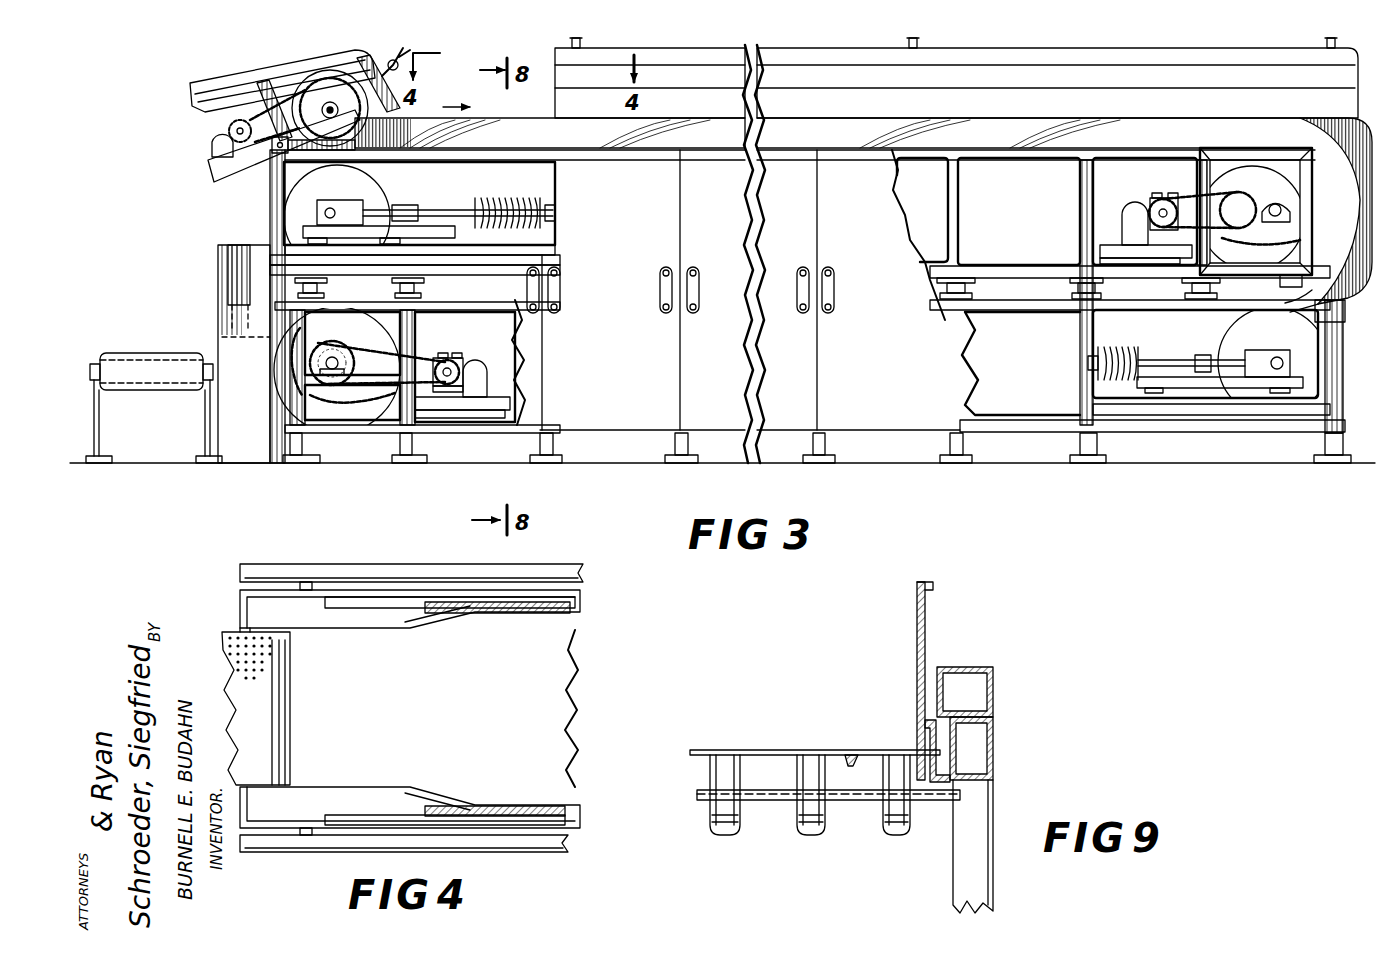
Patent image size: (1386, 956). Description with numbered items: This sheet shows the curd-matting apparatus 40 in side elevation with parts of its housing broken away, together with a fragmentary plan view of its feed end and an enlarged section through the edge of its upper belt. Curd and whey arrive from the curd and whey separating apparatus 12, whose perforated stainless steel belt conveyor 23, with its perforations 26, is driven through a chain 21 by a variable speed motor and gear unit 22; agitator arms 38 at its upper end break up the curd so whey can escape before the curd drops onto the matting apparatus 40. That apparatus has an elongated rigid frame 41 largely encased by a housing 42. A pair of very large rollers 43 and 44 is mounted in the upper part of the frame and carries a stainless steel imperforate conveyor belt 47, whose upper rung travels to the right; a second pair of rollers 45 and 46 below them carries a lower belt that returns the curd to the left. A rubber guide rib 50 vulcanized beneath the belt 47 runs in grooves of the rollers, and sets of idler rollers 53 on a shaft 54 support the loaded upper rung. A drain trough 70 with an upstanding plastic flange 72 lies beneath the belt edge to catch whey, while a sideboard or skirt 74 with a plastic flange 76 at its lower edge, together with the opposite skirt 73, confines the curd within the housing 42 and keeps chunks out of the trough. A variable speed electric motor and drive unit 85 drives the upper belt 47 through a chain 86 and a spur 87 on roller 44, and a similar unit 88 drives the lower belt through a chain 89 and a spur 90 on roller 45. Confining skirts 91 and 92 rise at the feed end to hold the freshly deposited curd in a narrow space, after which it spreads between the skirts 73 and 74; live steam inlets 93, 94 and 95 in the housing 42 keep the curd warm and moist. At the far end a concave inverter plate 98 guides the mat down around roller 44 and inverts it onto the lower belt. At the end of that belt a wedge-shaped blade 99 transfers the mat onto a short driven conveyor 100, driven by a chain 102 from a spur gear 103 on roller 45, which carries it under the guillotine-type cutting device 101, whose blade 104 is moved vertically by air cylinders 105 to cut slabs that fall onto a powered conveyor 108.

In FIG. 3, the curd and whey separating apparatus 12 is at (212, 70).
In FIG. 4, the curd and whey separating apparatus 12 is at (226, 614).
In FIG. 3, the chain 21 is at (229, 131).
In FIG. 3, the variable speed motor and gear unit 22 is at (212, 151).
In FIG. 4, the perforated stainless steel belt conveyor 23 is at (295, 717).
In FIG. 4, the perforations 26 is at (262, 663).
In FIG. 3, the agitator arms 38 is at (390, 60).
In FIG. 3, the curd-matting apparatus 40 is at (452, 78).
In FIG. 3, the elongated rigid frame 41 is at (470, 436).
In FIG. 4, the elongated rigid frame 41 is at (367, 574).
In FIG. 3, the housing 42 is at (798, 108).
In FIG. 4, the housing 42 is at (545, 612).
In FIG. 3, the roller 43 is at (380, 192).
In FIG. 3, the roller 44 is at (1239, 177).
In FIG. 3, the roller 45 is at (287, 394).
In FIG. 3, the roller 46 is at (1232, 337).
In FIG. 4, the stainless steel imperforate conveyor belt 47 is at (562, 698).
In FIG. 9, the stainless steel imperforate conveyor belt 47 is at (765, 750).
In FIG. 9, the rubber guide rib 50 is at (853, 767).
In FIG. 9, the idler rollers 53 is at (725, 838).
In FIG. 9, the shaft 54 is at (778, 802).
In FIG. 9, the drain trough 70 is at (946, 786).
In FIG. 9, the upstanding flange 72 is at (932, 768).
In FIG. 4, the sideboard or skirt 73 is at (398, 598).
In FIG. 3, the sideboard or skirt 74 is at (585, 135).
In FIG. 4, the sideboard or skirt 74 is at (385, 815).
In FIG. 9, the sideboard or skirt 74 is at (915, 618).
In FIG. 9, the plastic flange 76 is at (931, 724).
In FIG. 3, the variable speed electric motor and drive unit 85 is at (1122, 229).
In FIG. 3, the chain 86 is at (1178, 204).
In FIG. 3, the spur 87 is at (1255, 196).
In FIG. 3, the variable speed electric motor and drive unit 88 is at (486, 376).
In FIG. 3, the chain 89 is at (452, 360).
In FIG. 3, the spur 90 is at (380, 354).
In FIG. 4, the confining skirt 91 is at (404, 626).
In FIG. 4, the confining skirt 92 is at (465, 803).
In FIG. 3, the live steam inlet 93 is at (583, 42).
In FIG. 3, the live steam inlet 94 is at (920, 42).
In FIG. 3, the live steam inlet 95 is at (1338, 42).
In FIG. 3, the inverter plate 98 is at (1346, 278).
In FIG. 3, the wedge-shaped blade 99 is at (329, 311).
In FIG. 3, the short driven conveyor 100 is at (302, 337).
In FIG. 3, the guillotine-type cutting device 101 is at (212, 277).
In FIG. 3, the chain 102 is at (293, 350).
In FIG. 3, the spur gear 103 is at (348, 378).
In FIG. 3, the guillotine-type blade 104 is at (245, 320).
In FIG. 3, the air cylinder 105 is at (228, 252).
In FIG. 3, the powered conveyor 108 is at (120, 353).